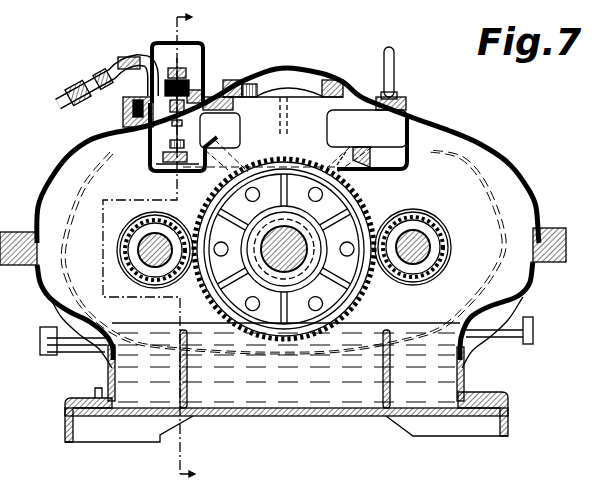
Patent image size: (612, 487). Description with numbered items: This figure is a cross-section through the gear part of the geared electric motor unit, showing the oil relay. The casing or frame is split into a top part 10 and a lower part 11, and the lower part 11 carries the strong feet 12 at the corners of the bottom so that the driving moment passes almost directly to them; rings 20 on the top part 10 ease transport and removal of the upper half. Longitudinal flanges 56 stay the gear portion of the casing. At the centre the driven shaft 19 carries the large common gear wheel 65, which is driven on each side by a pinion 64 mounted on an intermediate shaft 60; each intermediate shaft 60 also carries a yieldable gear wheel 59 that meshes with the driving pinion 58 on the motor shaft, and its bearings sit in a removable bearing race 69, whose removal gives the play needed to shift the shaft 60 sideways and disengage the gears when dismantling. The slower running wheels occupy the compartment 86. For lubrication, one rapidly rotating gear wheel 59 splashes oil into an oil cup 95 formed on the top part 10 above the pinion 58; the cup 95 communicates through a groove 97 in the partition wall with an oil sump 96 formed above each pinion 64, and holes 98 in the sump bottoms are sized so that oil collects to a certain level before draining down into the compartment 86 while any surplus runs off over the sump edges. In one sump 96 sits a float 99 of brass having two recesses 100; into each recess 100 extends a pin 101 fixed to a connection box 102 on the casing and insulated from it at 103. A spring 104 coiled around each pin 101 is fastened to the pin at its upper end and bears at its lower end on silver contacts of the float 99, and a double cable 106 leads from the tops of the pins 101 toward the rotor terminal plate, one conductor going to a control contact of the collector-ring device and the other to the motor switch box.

The top part of the casing 10 is at (511, 166).
The lower part of the casing 11 is at (533, 274).
The feet 12 is at (433, 427).
The driven shaft 19 is at (261, 255).
The rings 20 is at (393, 53).
The longitudinal flanges 56 is at (383, 382).
The pinion 58 is at (279, 278).
The gear wheels 59 is at (73, 200).
The intermediate shaft 60 is at (433, 254).
The pinion 64 is at (434, 230).
The gear wheel 65 is at (300, 338).
The bearing race 69 is at (406, 204).
The compartment 86 is at (519, 213).
The oil cup 95 is at (329, 165).
The oil sump 96 is at (416, 152).
The groove 97 is at (357, 165).
The holes 98 is at (403, 169).
The float 99 is at (190, 151).
The recesses 100 is at (160, 158).
The pin 101 is at (188, 82).
The connection box 102 is at (205, 102).
The insulation 103 is at (158, 78).
The spring 104 is at (165, 143).
The double cable 106 is at (70, 94).